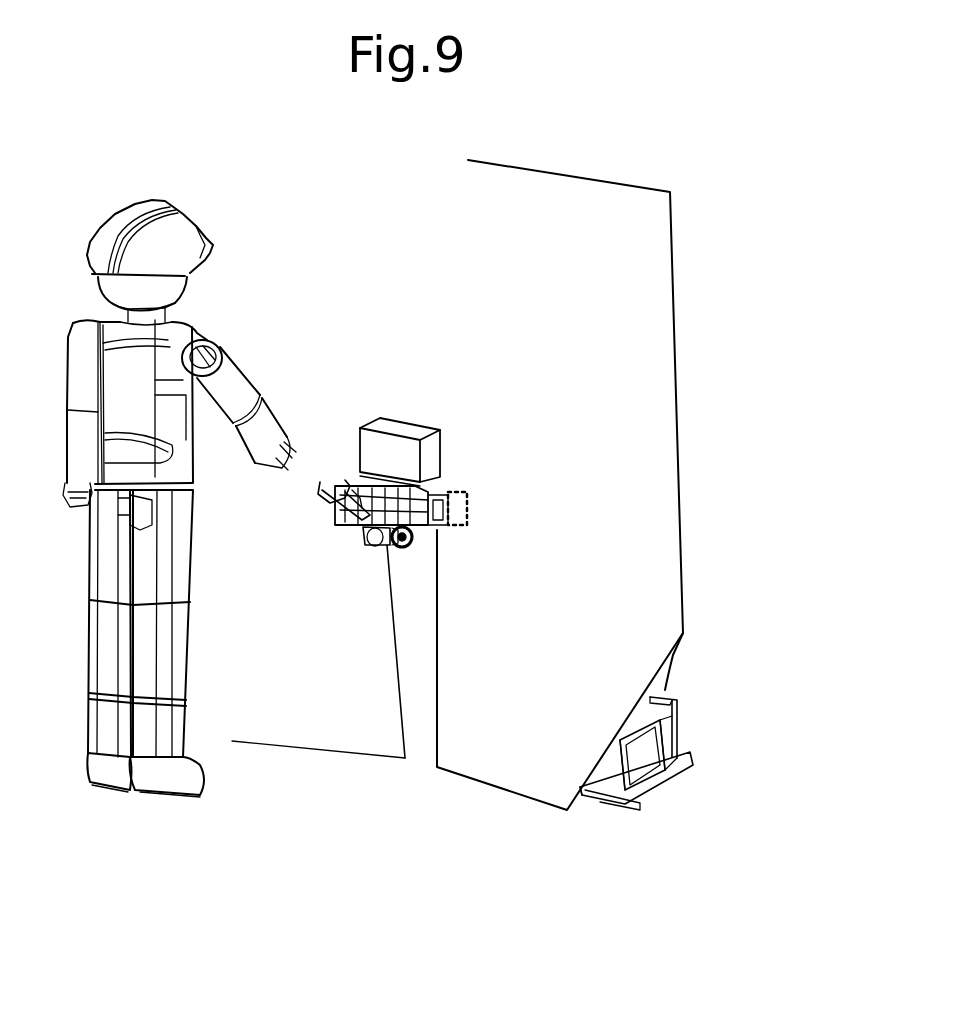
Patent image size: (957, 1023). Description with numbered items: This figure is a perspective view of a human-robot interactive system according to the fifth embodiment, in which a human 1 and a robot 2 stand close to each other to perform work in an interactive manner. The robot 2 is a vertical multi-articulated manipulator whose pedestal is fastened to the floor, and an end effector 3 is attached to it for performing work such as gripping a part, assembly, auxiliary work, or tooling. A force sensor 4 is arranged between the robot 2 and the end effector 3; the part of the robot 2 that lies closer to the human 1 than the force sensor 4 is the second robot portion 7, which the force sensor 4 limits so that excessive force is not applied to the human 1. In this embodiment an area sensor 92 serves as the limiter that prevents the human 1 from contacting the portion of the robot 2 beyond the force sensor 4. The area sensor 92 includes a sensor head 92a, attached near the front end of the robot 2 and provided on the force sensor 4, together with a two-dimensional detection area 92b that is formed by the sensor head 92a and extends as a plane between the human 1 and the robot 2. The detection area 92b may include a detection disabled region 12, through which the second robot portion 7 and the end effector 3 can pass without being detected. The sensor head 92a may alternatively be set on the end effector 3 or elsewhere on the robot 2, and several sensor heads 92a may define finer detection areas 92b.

The human 1 is at (122, 373).
The robot 2 is at (670, 808).
The end effector 3 is at (433, 543).
The force sensor 4 is at (468, 508).
The second robot portion 7 is at (404, 575).
The detection disabled region 12 is at (417, 593).
The area sensor 92 is at (693, 343).
The sensor head 92a is at (407, 430).
The two-dimensional detection area 92b is at (583, 455).